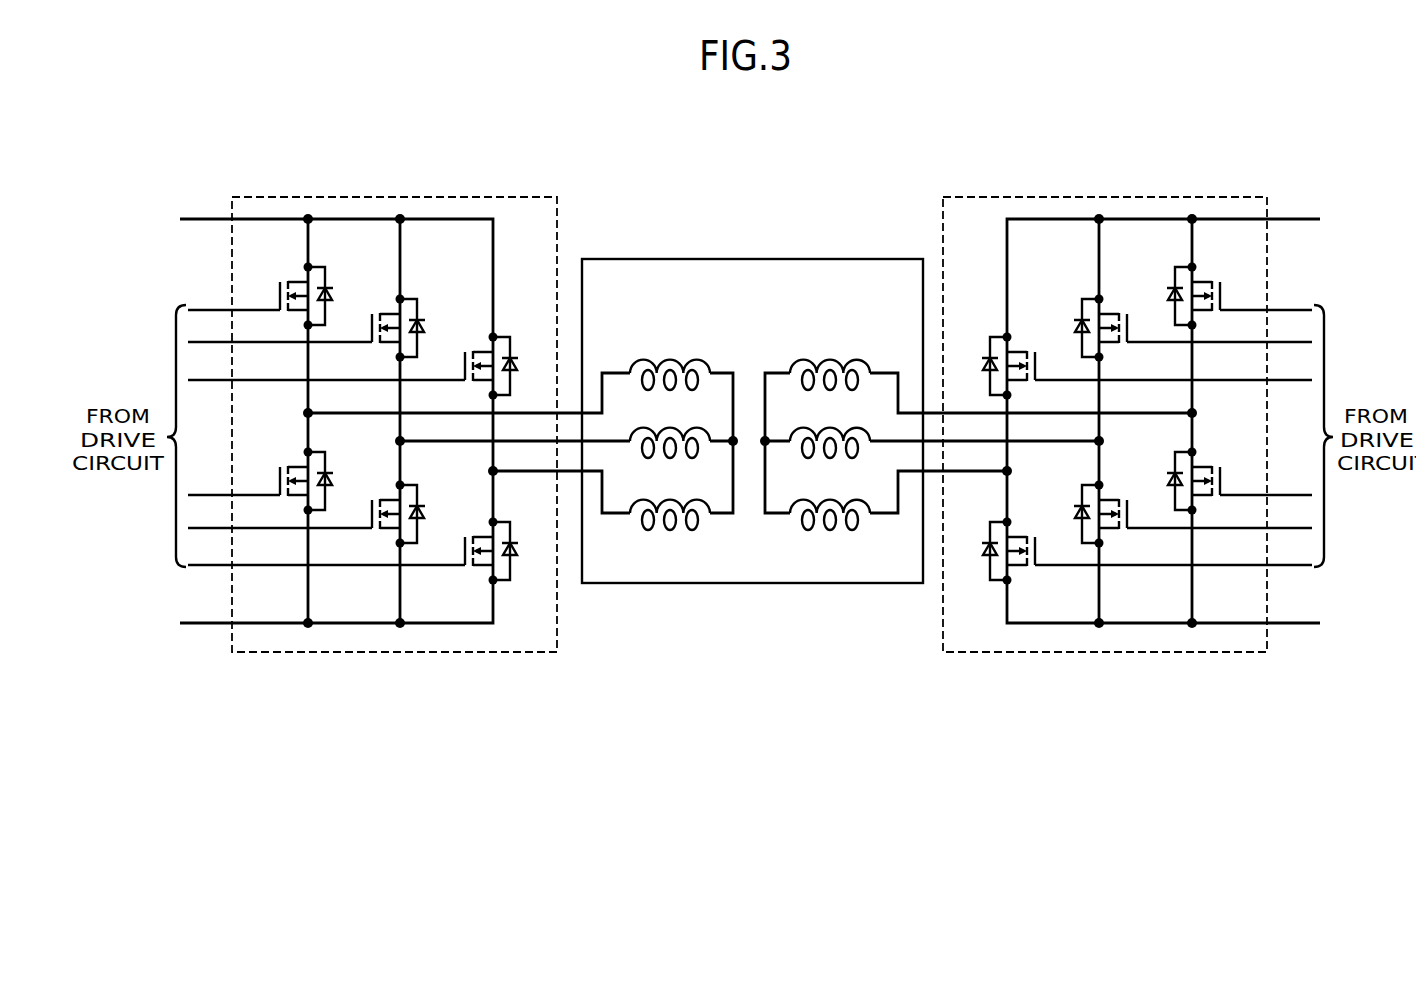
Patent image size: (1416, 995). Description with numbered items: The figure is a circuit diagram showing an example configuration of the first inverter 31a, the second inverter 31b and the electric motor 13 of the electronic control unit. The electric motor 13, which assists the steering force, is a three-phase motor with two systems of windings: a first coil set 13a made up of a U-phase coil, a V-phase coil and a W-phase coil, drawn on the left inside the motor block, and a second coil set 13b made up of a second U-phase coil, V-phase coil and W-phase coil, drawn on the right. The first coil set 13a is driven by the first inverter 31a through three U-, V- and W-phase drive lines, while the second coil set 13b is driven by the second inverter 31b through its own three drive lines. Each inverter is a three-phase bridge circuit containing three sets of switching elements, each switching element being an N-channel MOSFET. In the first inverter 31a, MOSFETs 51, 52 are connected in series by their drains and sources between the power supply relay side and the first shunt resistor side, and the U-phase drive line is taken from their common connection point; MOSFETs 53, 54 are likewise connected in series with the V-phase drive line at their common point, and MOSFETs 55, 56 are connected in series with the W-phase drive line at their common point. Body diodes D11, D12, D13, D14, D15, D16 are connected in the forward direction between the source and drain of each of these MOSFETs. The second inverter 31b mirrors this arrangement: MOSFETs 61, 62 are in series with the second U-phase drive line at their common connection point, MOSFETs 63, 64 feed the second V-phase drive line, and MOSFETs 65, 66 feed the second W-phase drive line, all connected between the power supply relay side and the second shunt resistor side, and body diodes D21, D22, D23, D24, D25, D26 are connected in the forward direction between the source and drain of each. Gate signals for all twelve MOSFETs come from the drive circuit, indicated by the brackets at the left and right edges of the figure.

The electric motor 13 is at (748, 259).
The first coil set 13a is at (636, 344).
The second coil set 13b is at (864, 344).
The first inverter 31a is at (557, 214).
The second inverter 31b is at (942, 232).
The MOSFET 51 is at (289, 282).
The MOSFET 52 is at (289, 467).
The MOSFET 53 is at (386, 312).
The MOSFET 54 is at (386, 500).
The MOSFET 55 is at (480, 351).
The MOSFET 56 is at (480, 537).
The MOSFET 61 is at (1211, 282).
The MOSFET 62 is at (1211, 467).
The MOSFET 63 is at (1114, 312).
The MOSFET 64 is at (1114, 500).
The MOSFET 65 is at (1020, 351).
The MOSFET 66 is at (1020, 537).
The body diode D11 is at (338, 297).
The body diode D12 is at (338, 482).
The body diode D13 is at (430, 330).
The body diode D14 is at (430, 516).
The body diode D15 is at (523, 367).
The body diode D16 is at (523, 552).
The body diode D21 is at (1162, 297).
The body diode D22 is at (1162, 482).
The body diode D23 is at (1069, 330).
The body diode D24 is at (1069, 516).
The body diode D25 is at (977, 367).
The body diode D26 is at (977, 552).